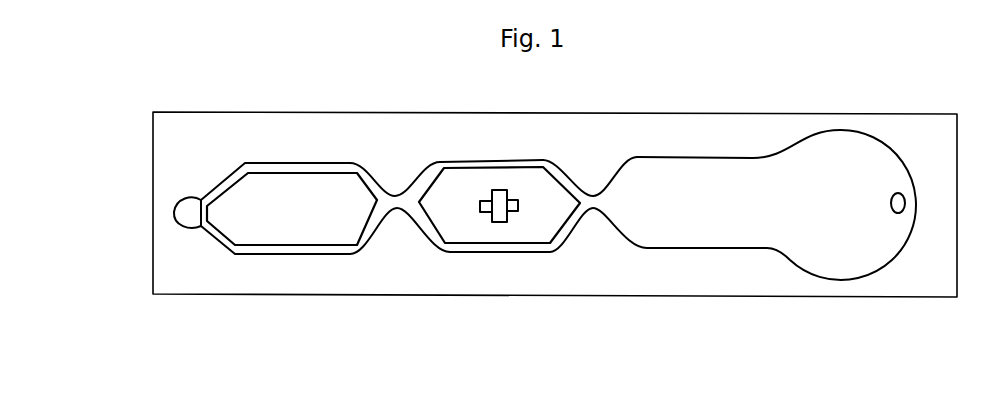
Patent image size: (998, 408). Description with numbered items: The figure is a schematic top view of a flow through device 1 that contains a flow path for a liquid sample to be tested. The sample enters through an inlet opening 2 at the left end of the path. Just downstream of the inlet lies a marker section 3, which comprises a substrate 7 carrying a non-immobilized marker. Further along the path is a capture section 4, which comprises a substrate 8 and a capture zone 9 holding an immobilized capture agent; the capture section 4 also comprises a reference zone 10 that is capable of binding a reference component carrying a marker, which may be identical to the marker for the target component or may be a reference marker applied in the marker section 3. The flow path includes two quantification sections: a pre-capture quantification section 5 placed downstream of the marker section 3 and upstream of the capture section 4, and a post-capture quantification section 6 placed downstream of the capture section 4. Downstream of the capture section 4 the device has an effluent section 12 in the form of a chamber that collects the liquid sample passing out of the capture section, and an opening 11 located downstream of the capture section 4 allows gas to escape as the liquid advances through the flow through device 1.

The flow through device 1 is at (700, 305).
The inlet opening 2 is at (187, 215).
The marker section 3 is at (243, 197).
The capture section 4 is at (448, 182).
The pre-capture quantification section 5 is at (397, 203).
The post-capture quantification section 6 is at (593, 204).
The substrate 7 is at (301, 228).
The substrate 8 is at (553, 220).
The capture zone 9 is at (499, 192).
The reference zone 10 is at (513, 211).
The opening 11 is at (902, 193).
The effluent section 12 is at (768, 203).